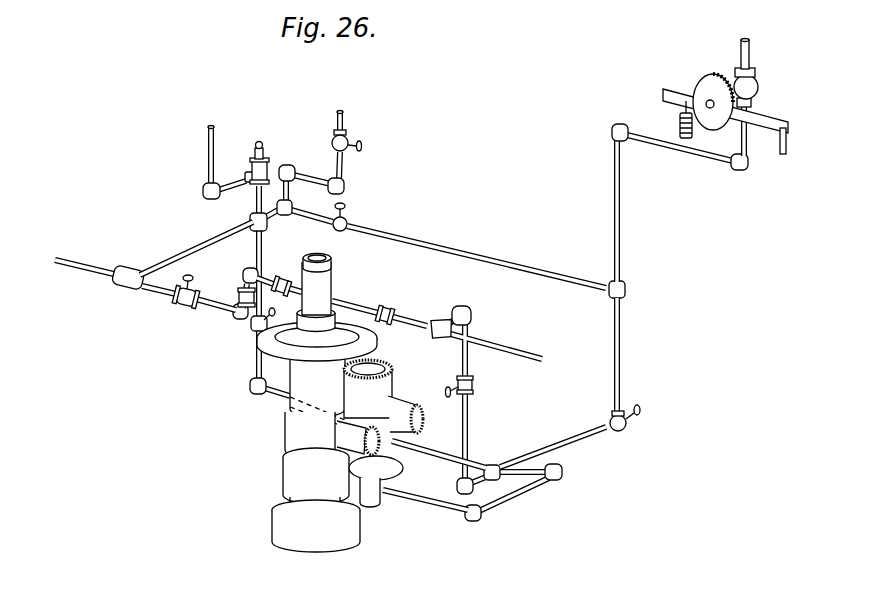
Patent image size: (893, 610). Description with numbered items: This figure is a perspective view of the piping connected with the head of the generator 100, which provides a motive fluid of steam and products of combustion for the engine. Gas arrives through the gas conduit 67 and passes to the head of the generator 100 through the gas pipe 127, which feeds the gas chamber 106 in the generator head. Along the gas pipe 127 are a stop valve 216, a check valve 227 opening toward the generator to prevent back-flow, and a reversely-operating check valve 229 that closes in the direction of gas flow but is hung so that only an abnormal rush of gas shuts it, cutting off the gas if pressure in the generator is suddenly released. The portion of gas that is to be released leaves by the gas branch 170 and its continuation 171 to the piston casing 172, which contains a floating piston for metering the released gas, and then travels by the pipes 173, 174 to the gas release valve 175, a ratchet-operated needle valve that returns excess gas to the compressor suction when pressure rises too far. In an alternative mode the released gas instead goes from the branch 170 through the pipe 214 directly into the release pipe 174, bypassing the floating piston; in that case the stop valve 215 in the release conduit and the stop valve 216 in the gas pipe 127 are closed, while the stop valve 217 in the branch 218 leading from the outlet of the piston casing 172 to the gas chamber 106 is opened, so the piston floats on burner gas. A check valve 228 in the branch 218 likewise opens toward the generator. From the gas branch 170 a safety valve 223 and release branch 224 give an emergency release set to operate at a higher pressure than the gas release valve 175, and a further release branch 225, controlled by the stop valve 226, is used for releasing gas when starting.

The gas conduit 67 is at (77, 267).
The generator 100 is at (273, 529).
The gas chamber 106 is at (327, 283).
The gas pipe 127 is at (218, 311).
The gas branch 170 is at (213, 238).
The continuation pipe 171 is at (430, 513).
The piston casing 172 is at (383, 385).
The pipe 173 is at (440, 450).
The release pipe 174 is at (620, 198).
The gas release valve 175 is at (758, 84).
The pipe 214 is at (535, 258).
The stop valve 215 is at (623, 430).
The stop valve 216 is at (186, 306).
The stop valve 217 is at (473, 385).
The branch 218 is at (472, 327).
The safety valve 223 is at (263, 151).
The release branch 224 is at (208, 142).
The release branch 225 is at (347, 125).
The stop valve 226 is at (360, 151).
The check valve 227 is at (282, 282).
The check valve 228 is at (389, 311).
The reversely-operating check valve 229 is at (241, 290).